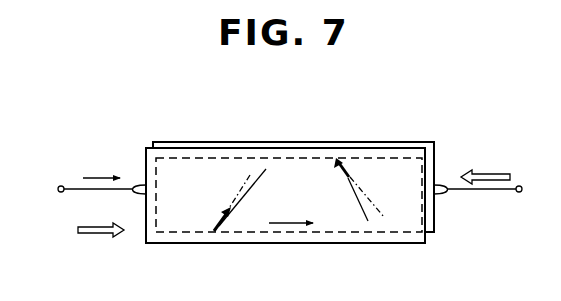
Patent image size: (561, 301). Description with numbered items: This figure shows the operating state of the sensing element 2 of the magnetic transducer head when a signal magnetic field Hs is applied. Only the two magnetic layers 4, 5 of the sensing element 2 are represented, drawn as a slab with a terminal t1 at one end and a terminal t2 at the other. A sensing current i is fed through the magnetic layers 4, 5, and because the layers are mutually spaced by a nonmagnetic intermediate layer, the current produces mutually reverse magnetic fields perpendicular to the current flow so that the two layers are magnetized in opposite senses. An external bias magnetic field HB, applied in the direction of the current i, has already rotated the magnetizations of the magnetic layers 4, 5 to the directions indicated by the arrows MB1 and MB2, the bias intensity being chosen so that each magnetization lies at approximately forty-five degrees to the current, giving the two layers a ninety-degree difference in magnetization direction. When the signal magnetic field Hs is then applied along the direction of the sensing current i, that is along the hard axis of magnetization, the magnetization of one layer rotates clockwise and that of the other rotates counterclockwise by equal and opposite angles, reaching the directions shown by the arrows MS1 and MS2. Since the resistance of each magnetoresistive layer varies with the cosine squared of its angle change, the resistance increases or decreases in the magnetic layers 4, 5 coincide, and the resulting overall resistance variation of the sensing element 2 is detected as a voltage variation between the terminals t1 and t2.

The sensing element 2 is at (438, 121).
The magnetic layer 4 is at (306, 148).
The magnetic layer 5 is at (383, 142).
The arrow Ms1 MS1 is at (249, 174).
The arrow MB1 is at (237, 204).
The arrow Ms2 MS2 is at (353, 170).
The arrow MB2 is at (346, 181).
The sensing current i is at (191, 197).
The terminal t1 is at (61, 193).
The terminal t2 is at (519, 192).
The signal magnetic field Hs is at (101, 221).
The bias magnetic field HB is at (485, 166).